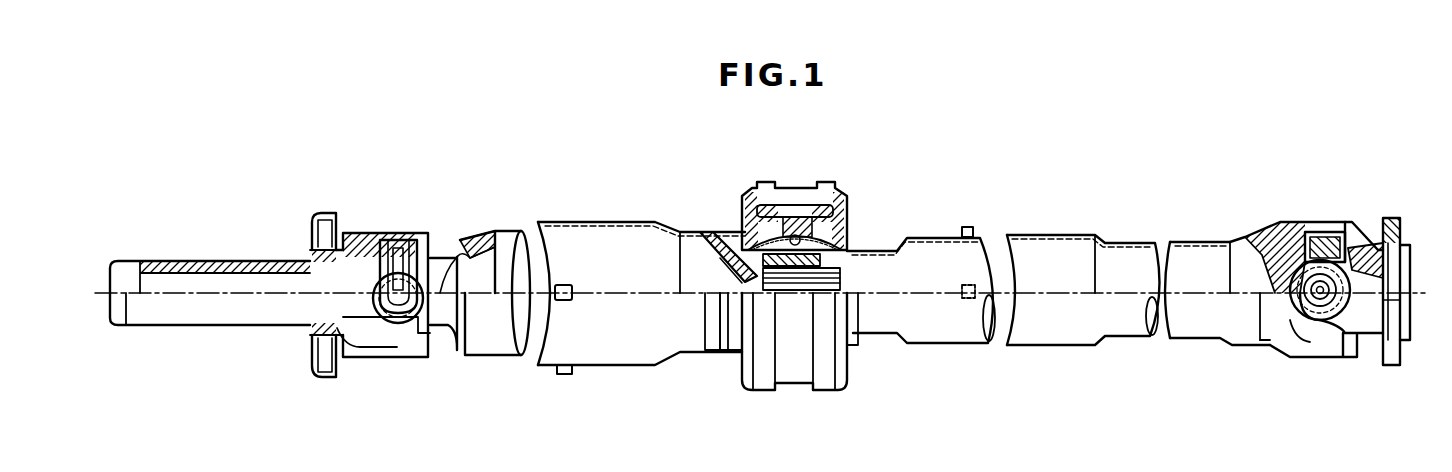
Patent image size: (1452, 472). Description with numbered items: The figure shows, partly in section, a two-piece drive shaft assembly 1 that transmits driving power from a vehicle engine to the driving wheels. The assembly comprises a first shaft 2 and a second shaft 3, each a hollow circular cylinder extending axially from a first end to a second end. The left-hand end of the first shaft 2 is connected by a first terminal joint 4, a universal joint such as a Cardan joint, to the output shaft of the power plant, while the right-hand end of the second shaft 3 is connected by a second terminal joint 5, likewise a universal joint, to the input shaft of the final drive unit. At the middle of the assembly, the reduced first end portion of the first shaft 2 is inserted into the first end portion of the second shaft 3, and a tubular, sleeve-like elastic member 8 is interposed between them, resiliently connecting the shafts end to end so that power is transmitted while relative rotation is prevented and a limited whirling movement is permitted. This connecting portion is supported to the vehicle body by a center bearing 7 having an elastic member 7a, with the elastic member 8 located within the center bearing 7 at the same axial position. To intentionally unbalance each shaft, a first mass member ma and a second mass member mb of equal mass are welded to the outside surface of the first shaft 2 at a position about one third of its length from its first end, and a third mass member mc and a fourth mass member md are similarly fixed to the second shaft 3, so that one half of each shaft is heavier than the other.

The drive shaft assembly 1 is at (1040, 127).
The first shaft 2 is at (557, 220).
The second shaft 3 is at (1057, 346).
The first terminal joint 4 is at (397, 218).
The second terminal joint 5 is at (1330, 203).
The center bearing 7 is at (830, 171).
The elastic member 7a is at (834, 197).
The elastic member 8 is at (720, 222).
The first mass member ma is at (563, 374).
The second mass member mb is at (565, 300).
The third mass member mc is at (968, 226).
The fourth mass member md is at (961, 292).